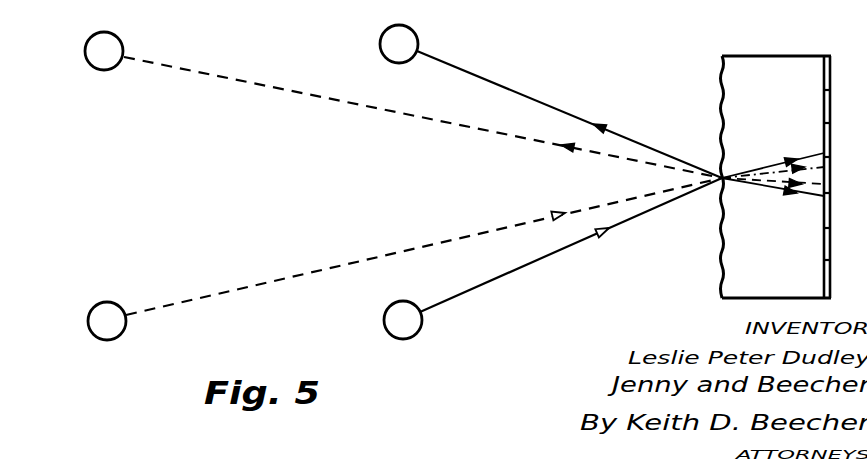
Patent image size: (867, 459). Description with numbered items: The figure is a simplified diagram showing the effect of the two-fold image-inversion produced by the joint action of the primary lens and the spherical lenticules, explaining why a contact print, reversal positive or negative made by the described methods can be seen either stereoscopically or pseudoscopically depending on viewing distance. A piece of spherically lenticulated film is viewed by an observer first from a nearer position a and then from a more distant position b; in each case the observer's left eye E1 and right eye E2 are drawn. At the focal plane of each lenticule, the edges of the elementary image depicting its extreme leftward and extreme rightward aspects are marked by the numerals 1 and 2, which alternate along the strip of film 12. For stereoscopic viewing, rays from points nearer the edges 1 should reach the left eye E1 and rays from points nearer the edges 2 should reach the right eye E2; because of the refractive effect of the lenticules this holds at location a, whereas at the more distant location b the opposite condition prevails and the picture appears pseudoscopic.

The elementary image edge (extreme leftward aspect) 1 is at (829, 175).
The elementary image edge (extreme rightward aspect) 2 is at (828, 186).
The alternating strip screen 12 is at (827, 177).
The observer's left eye E1 is at (231, 50).
The observer's right eye E2 is at (234, 328).
The first viewing position a is at (564, 207).
The more distant viewing position b is at (422, 212).